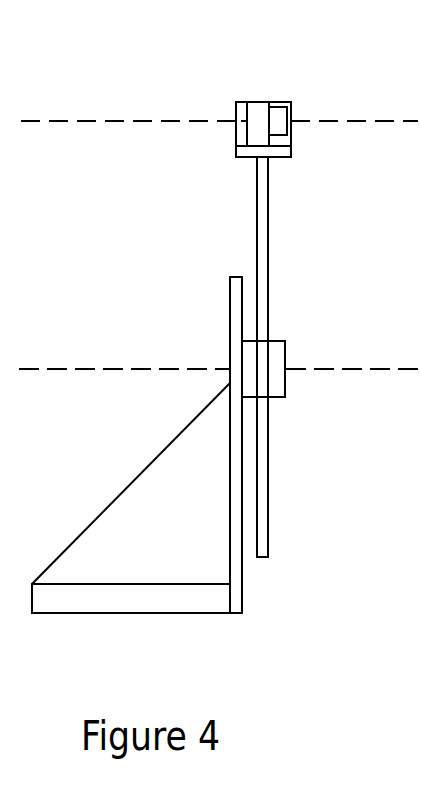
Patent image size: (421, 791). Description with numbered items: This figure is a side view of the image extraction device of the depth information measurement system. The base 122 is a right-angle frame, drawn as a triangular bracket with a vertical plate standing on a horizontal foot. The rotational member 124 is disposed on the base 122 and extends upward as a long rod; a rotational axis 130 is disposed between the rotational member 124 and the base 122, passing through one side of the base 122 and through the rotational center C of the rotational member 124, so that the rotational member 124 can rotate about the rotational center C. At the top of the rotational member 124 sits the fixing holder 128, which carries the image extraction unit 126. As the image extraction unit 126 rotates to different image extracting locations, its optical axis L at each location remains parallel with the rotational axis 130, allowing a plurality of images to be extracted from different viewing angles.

The base 122 is at (242, 595).
The rotational member 124 is at (268, 196).
The image extraction unit 126 is at (237, 116).
The fixing holder 128 is at (236, 150).
The rotational axis 130 is at (242, 357).
The optical axis L is at (333, 121).
The rotational center C is at (335, 368).